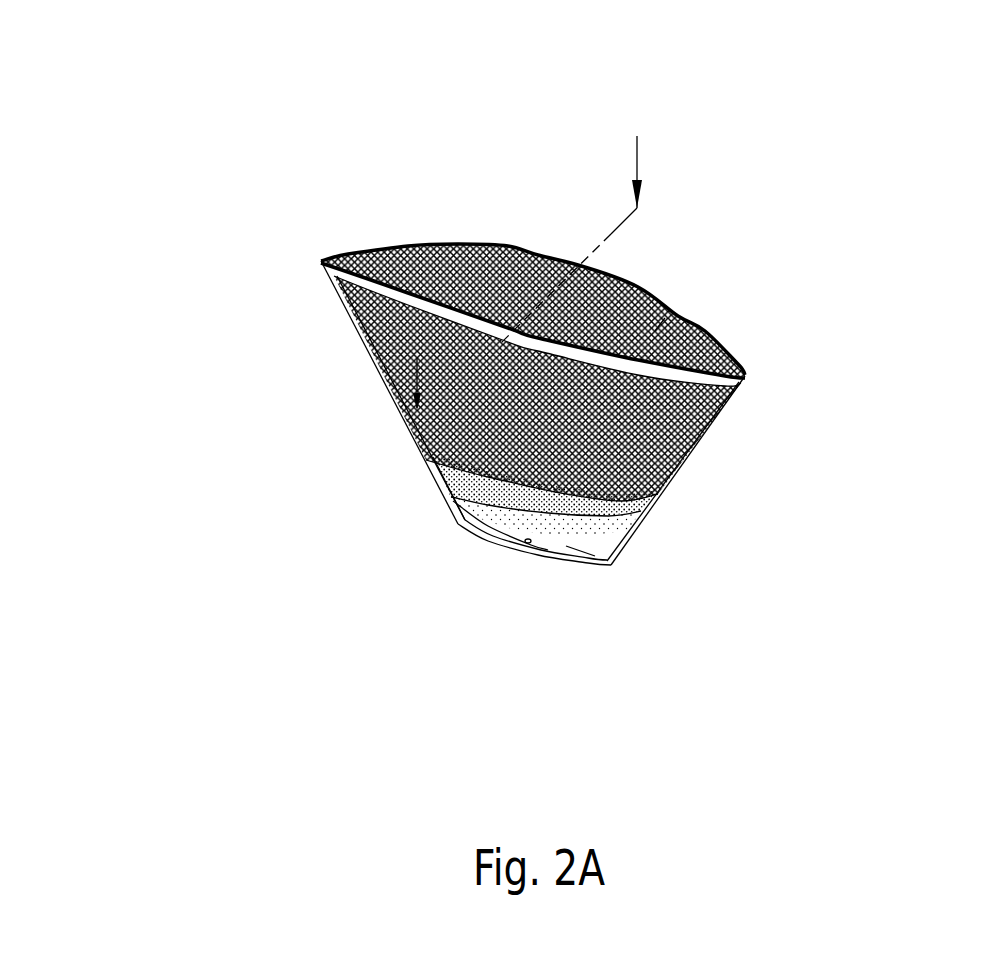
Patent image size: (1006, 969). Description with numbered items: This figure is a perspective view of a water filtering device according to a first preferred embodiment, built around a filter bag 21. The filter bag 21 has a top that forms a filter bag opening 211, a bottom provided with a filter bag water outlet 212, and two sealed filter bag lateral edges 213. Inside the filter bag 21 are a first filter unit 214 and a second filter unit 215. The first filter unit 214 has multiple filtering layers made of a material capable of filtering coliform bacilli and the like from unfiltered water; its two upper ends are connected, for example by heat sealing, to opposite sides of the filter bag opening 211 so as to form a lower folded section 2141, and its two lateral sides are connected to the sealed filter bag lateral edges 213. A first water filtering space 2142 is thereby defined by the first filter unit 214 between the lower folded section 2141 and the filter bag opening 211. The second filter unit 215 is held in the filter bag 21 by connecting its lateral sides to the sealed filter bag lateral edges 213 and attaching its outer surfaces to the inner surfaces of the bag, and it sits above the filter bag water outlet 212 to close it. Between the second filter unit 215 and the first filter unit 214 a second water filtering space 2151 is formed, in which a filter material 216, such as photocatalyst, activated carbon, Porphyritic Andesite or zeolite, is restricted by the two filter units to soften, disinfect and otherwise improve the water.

The filter bag 21 is at (561, 348).
The filter bag opening 211 is at (605, 280).
The filter bag water outlet 212 is at (493, 517).
The sealed filter bag lateral edges 213 is at (313, 262).
The first filter unit 214 is at (584, 328).
The lower folded section 2141 is at (673, 463).
The first water filtering space 2142 is at (430, 253).
The second filter unit 215 is at (545, 507).
The second water filtering space 2151 is at (412, 440).
The filter material 216 is at (650, 495).